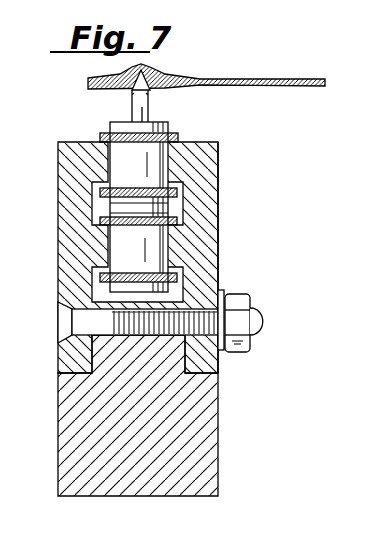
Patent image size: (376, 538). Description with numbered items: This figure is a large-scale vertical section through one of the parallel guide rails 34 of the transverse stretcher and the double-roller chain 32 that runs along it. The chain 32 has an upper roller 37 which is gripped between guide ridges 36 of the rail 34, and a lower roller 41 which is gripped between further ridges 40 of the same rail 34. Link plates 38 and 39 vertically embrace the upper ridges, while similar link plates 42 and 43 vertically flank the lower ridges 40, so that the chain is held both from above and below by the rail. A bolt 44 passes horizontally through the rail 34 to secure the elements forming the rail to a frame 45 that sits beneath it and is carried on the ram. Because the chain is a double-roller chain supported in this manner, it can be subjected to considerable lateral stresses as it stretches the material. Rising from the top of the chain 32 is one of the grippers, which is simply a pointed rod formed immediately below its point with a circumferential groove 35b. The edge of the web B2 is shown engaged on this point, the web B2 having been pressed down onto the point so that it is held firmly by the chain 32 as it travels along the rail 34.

The parallel guide rail 34 is at (217, 245).
The frame 45 is at (203, 449).
The guide ridges 36 is at (173, 165).
The upper roller 37 is at (121, 163).
The roller chain 32 is at (102, 203).
The further ridges 40 is at (104, 232).
The lower roller 41 is at (127, 252).
The link plate 38 is at (180, 136).
The link plate 39 is at (173, 194).
The link plate 42 is at (173, 222).
The link plate 43 is at (173, 278).
The bolt 44 is at (83, 322).
The circumferential groove 35b is at (130, 93).
The web B2 is at (267, 82).